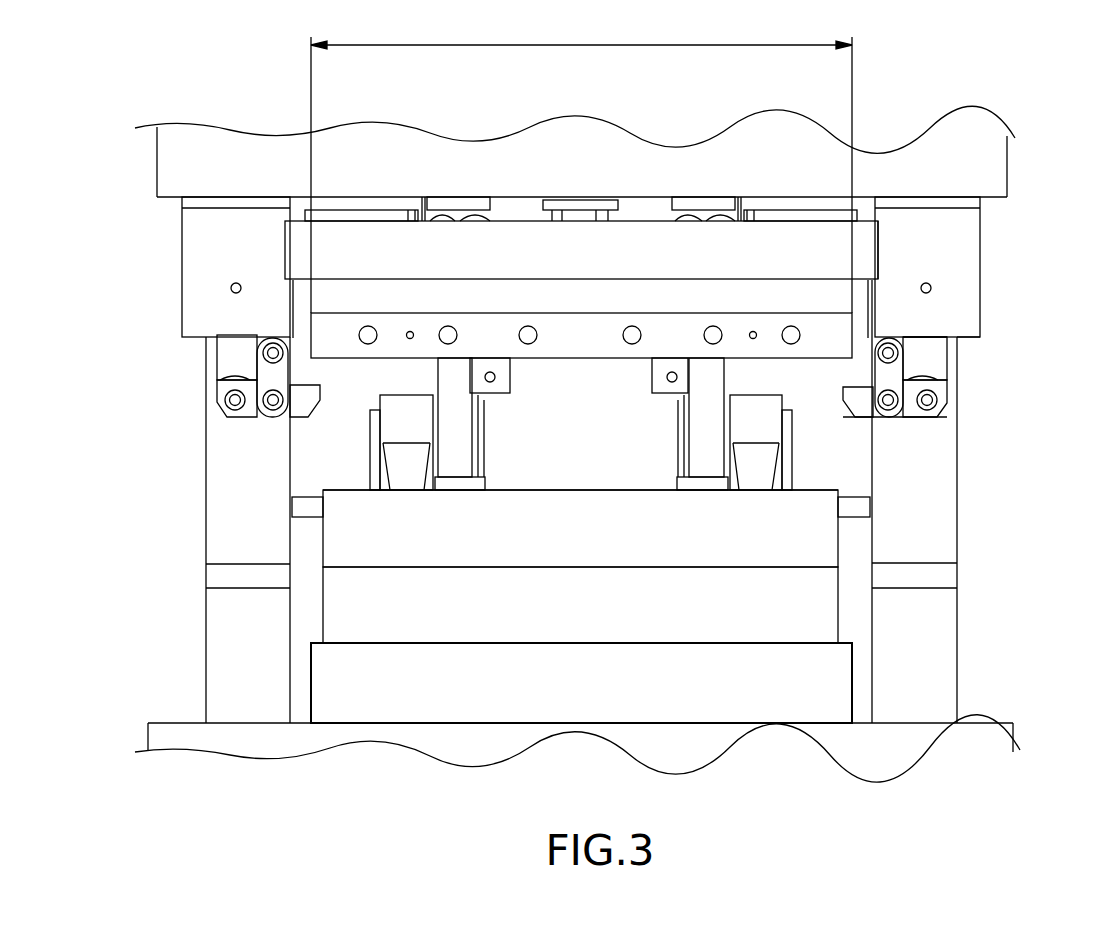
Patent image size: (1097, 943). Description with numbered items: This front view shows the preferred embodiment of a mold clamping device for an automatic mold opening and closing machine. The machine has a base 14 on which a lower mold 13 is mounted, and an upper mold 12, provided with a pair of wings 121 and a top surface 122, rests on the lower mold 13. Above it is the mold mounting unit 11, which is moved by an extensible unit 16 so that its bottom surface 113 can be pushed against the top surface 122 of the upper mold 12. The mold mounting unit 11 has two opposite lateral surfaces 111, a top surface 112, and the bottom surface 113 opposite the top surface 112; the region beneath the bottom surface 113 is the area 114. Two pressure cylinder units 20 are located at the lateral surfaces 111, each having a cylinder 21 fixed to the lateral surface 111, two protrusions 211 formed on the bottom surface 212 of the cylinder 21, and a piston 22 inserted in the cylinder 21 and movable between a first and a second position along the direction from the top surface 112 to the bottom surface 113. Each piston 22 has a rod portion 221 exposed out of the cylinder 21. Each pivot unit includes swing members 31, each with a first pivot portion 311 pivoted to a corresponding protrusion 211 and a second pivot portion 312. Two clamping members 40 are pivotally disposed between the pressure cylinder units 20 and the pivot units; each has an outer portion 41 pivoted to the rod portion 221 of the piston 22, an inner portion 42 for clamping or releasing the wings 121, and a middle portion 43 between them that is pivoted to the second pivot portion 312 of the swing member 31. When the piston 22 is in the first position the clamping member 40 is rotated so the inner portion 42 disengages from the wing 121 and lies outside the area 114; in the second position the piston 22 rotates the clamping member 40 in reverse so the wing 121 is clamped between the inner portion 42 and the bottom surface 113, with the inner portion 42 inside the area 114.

The mold mounting unit 11 is at (805, 206).
The lateral surfaces 111 is at (878, 240).
The top surface 112 is at (377, 215).
The bottom surface 113 is at (565, 360).
The area below the bottom surface 114 is at (667, 45).
The upper mold 12 is at (307, 537).
The wings 121 is at (307, 502).
The top surface of the upper mold 122 is at (602, 490).
The lower mold 13 is at (307, 612).
The base 14 is at (747, 703).
The extensible unit 16 is at (582, 200).
The pressure cylinder units 20 is at (985, 237).
The cylinder 21 is at (970, 297).
The protrusions 211 is at (903, 338).
The bottom surface of the cylinder 212 is at (972, 338).
The piston 22 is at (933, 362).
The rod portion 221 is at (943, 415).
The swing members 31 is at (861, 354).
The first pivot portion 311 is at (883, 338).
The second pivot portion 312 is at (888, 420).
The clamping members 40 is at (880, 436).
The outer portion 41 is at (927, 415).
The inner portion 42 is at (850, 395).
The middle portion 43 is at (888, 400).